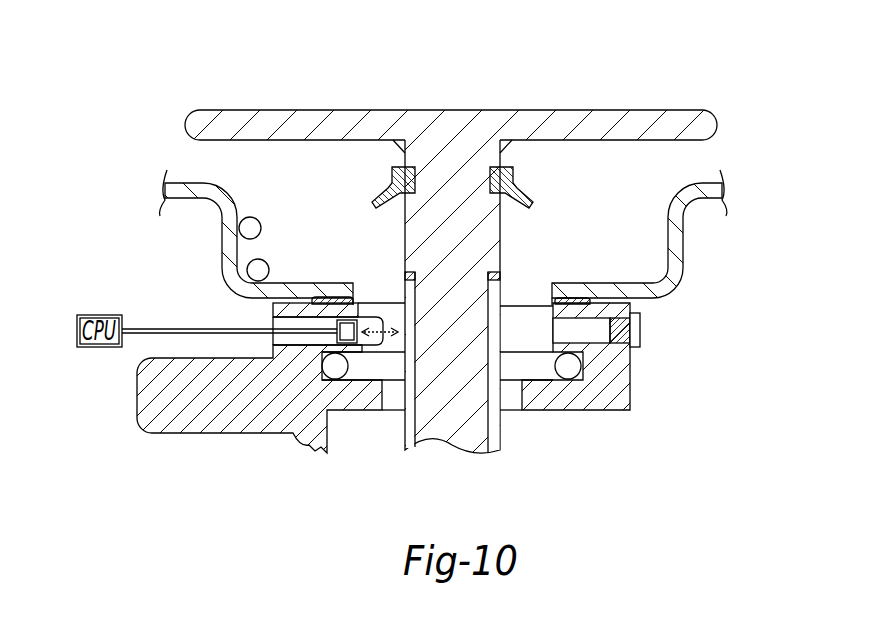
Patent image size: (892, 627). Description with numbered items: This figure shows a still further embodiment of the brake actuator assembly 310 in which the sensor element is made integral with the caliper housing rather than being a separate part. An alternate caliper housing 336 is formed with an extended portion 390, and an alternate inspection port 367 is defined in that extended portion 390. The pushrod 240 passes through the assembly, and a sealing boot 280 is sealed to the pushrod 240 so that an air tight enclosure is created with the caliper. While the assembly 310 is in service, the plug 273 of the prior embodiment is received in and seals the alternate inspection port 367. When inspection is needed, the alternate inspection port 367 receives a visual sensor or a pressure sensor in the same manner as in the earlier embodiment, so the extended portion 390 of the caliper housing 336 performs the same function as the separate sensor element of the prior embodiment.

The assembly 310 is at (650, 90).
The pushrod 240 is at (470, 225).
The sealing boot 280 is at (525, 193).
The extended portion 390 is at (632, 306).
The alternate caliper housing 336 is at (215, 412).
The alternate inspection port 367 is at (593, 333).
The plug 273 is at (641, 330).